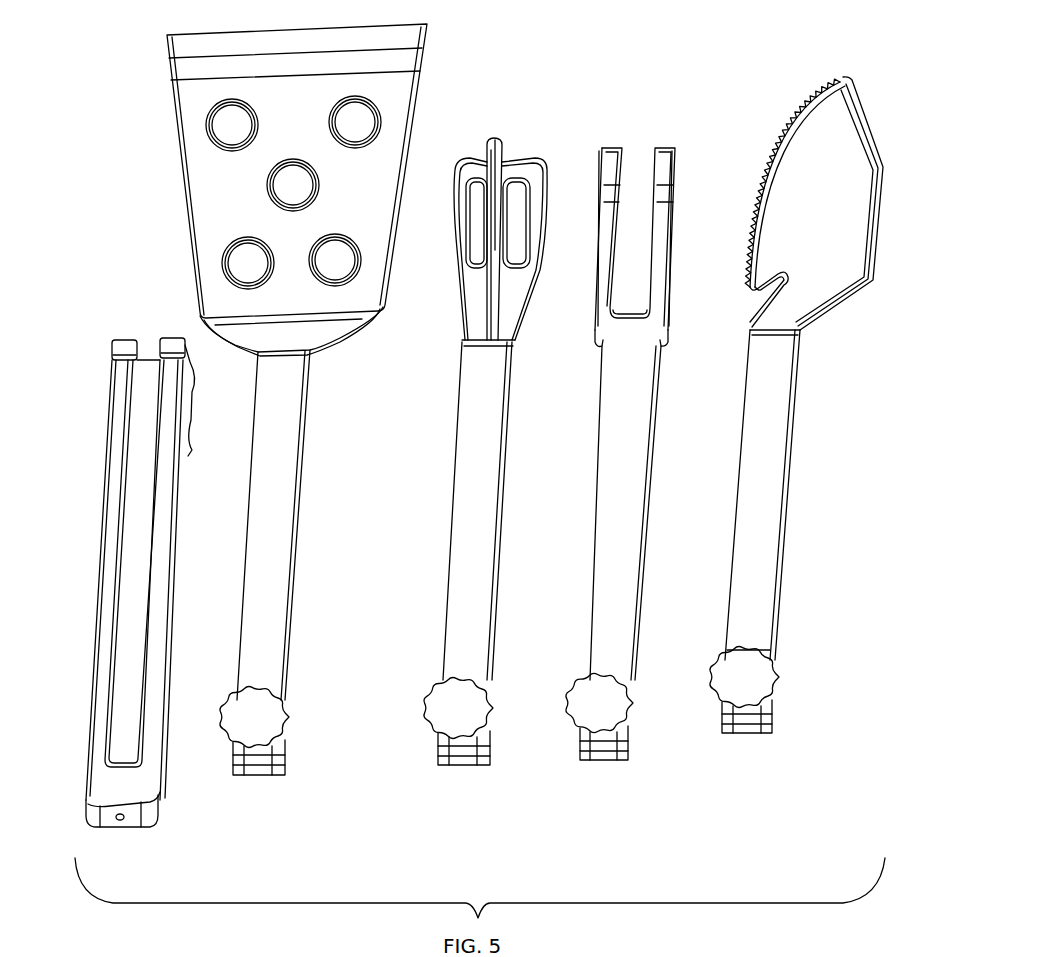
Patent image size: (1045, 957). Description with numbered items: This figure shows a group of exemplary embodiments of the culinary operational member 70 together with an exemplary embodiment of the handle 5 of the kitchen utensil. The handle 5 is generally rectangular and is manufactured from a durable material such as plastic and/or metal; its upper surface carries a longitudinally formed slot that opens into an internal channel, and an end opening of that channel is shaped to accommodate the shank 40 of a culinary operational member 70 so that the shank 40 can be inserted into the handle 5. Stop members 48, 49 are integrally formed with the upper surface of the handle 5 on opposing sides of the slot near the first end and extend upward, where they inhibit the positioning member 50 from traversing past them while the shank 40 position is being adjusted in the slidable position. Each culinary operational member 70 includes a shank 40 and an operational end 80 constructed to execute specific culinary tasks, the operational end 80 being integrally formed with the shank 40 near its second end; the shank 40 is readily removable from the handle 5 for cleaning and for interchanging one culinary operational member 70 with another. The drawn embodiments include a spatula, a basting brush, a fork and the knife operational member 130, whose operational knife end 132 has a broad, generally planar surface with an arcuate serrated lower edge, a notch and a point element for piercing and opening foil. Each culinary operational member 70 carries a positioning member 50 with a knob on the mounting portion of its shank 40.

The handle 5 is at (95, 593).
The stop member 48 is at (123, 338).
The stop member 49 is at (171, 336).
The operational end 80 is at (426, 77).
The culinary operational member 70 is at (341, 406).
The shank 40 is at (287, 545).
The positioning member 50 is at (254, 712).
The knife operational member 130 is at (829, 426).
The operational knife end 132 is at (891, 142).